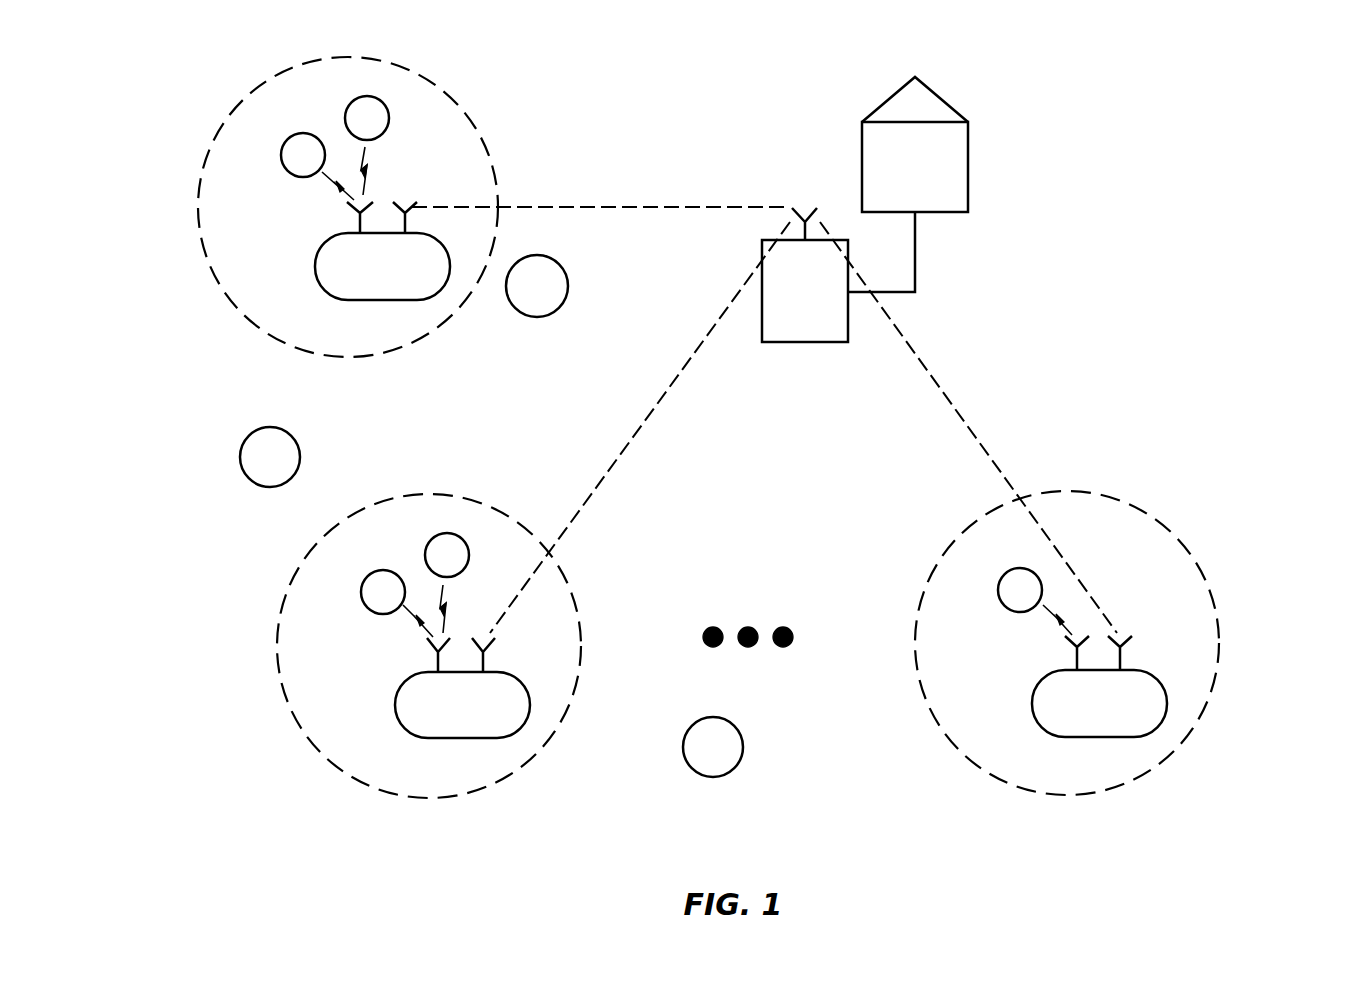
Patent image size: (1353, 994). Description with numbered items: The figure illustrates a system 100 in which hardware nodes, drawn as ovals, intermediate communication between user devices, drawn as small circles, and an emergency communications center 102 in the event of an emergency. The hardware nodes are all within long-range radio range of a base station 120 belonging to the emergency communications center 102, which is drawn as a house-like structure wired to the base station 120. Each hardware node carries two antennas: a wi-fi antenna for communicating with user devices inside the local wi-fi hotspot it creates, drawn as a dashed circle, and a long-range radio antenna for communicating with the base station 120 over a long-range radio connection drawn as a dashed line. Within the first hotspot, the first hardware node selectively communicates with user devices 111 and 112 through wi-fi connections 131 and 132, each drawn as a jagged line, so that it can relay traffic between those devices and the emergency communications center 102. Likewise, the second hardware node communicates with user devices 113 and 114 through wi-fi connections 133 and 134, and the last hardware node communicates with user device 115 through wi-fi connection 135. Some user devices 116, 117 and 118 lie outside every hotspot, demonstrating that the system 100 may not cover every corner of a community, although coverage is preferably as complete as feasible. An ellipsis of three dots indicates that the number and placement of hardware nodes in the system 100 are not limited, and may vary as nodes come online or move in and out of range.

The system 100 is at (684, 53).
The emergency communications center 102 is at (898, 174).
The user device 111 is at (282, 161).
The user device 112 is at (389, 118).
The user device 113 is at (362, 596).
The user device 114 is at (469, 553).
The user device 115 is at (999, 595).
The user device 116 is at (300, 455).
The user device 117 is at (568, 283).
The user device 118 is at (743, 740).
The base station 120 is at (788, 299).
The wi-fi connection 131 is at (330, 182).
The wi-fi connection 132 is at (370, 168).
The wi-fi connection 133 is at (408, 620).
The wi-fi connection 134 is at (448, 603).
The wi-fi connection 135 is at (1046, 618).